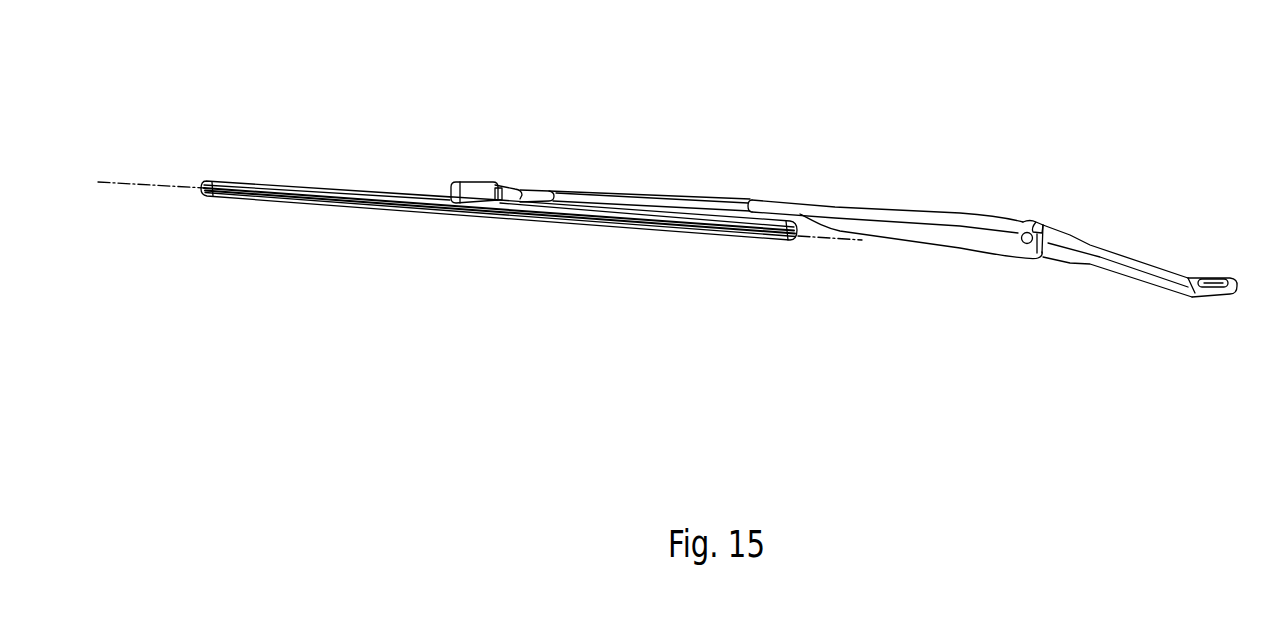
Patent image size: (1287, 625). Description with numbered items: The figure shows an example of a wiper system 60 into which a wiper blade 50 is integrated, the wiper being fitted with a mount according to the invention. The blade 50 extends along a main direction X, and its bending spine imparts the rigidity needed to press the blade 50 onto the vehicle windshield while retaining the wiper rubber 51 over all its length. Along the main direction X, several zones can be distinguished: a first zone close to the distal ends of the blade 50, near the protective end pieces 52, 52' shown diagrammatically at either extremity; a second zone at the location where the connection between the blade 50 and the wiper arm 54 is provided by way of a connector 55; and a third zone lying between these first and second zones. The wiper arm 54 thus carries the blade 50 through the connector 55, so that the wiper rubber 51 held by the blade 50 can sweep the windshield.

The blade 50 is at (329, 182).
The wiper rubber 51 is at (575, 231).
The protective end piece 52 is at (193, 131).
The protective end piece 52' is at (819, 287).
The wiper arm 54 is at (649, 192).
The connector 55 is at (473, 210).
The wiper system 60 is at (546, 146).
The main direction X is at (140, 182).